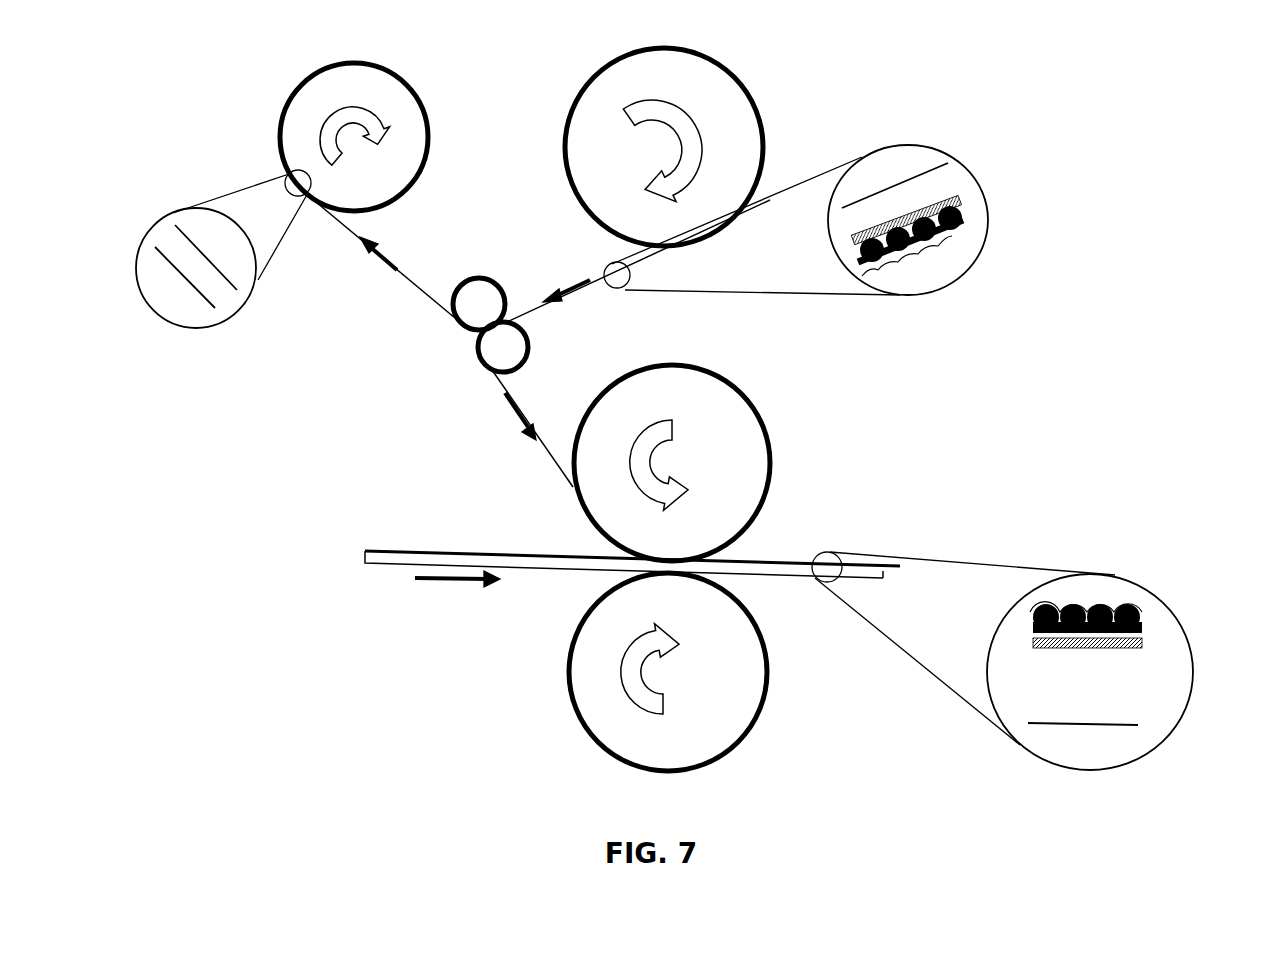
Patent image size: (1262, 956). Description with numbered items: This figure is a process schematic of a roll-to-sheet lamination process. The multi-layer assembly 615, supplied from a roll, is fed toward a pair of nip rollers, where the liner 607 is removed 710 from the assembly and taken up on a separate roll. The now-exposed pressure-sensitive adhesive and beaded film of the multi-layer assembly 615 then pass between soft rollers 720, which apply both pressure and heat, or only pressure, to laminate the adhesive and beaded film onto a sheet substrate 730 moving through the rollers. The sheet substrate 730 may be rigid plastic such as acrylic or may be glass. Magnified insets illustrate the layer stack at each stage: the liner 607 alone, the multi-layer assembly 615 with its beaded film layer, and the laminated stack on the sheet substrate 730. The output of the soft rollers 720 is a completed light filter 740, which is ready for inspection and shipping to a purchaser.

The liner 607 is at (207, 283).
The multi-layer assembly 615 is at (1183, 612).
The liner removal 710 is at (471, 338).
The soft rollers 720 is at (669, 568).
The sheet substrate 730 is at (365, 556).
The completed light filter 740 is at (665, 591).